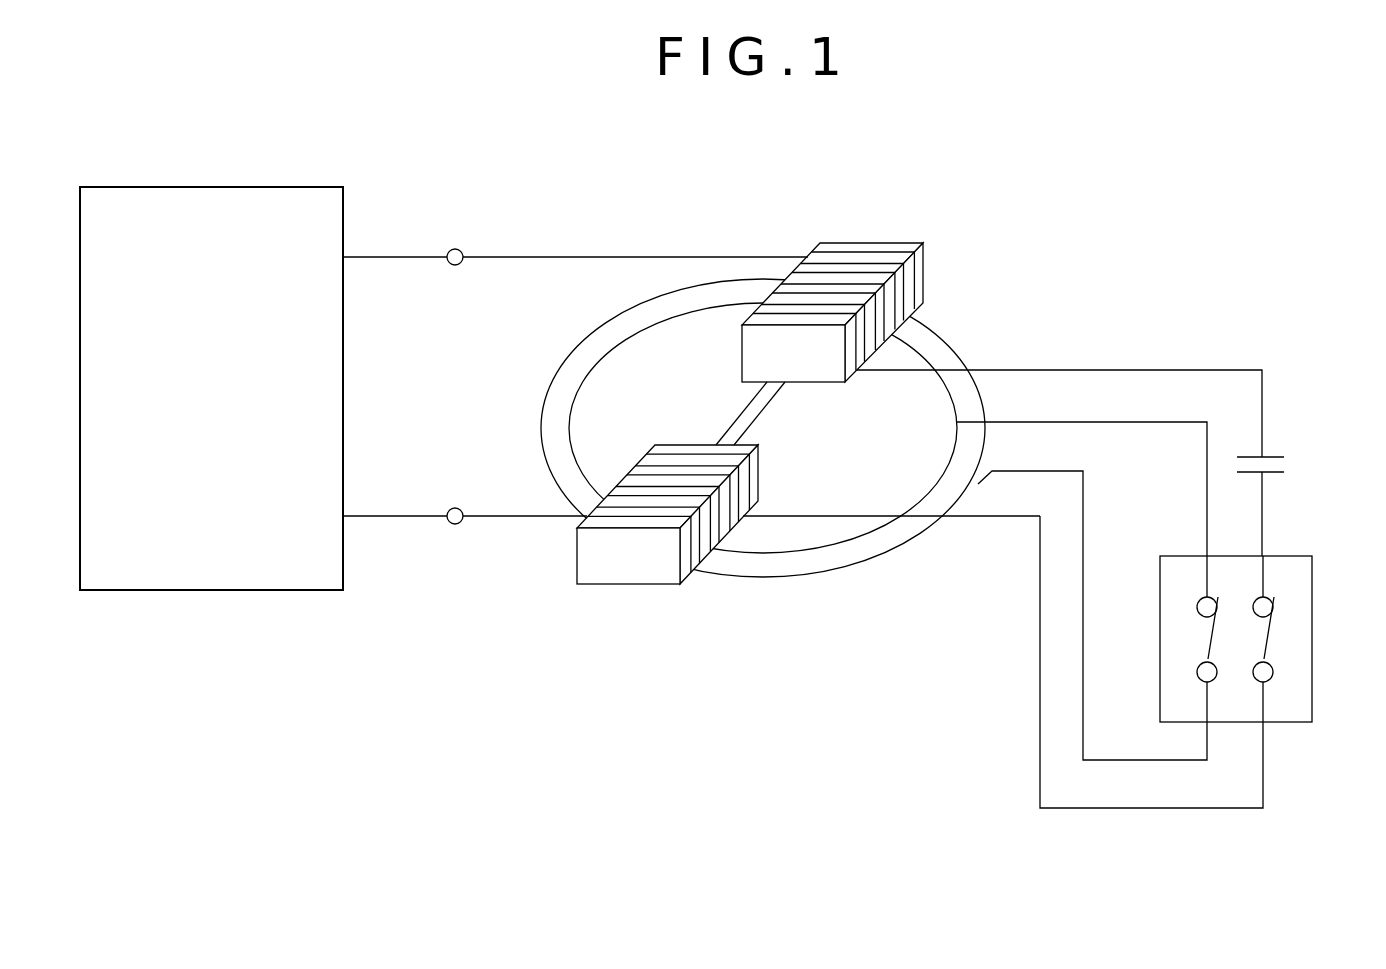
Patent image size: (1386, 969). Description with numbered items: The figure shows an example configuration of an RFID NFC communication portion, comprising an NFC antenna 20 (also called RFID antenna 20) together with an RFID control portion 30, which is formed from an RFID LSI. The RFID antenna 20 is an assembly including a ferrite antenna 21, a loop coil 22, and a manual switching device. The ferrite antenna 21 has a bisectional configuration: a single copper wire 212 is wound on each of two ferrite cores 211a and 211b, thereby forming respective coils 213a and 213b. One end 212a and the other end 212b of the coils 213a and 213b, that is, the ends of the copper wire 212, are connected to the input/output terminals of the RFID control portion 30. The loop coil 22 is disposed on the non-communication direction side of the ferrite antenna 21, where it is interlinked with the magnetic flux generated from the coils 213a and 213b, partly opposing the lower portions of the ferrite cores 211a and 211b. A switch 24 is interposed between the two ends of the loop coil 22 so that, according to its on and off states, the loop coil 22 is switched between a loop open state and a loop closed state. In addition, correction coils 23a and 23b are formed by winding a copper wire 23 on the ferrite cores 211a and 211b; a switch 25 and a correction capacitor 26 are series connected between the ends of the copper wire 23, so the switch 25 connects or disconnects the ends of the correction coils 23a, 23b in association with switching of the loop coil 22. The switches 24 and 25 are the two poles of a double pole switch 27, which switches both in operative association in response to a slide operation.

The RFID control portion 30 is at (222, 187).
The NFC antenna 20 is at (970, 183).
The ferrite antenna 21 is at (1082, 350).
The loop coil 22 is at (885, 556).
The copper wire 23 is at (1177, 369).
The correction coil 23a is at (852, 352).
The correction coil 23b is at (745, 490).
The switch 24 is at (1215, 637).
The switch 25 is at (1272, 633).
The correction capacitor 26 is at (1282, 455).
The double pole switch 27 is at (1292, 723).
The ferrite core 211a is at (894, 288).
The ferrite core 211b is at (671, 549).
The copper wire 212 is at (654, 256).
The one end 212a is at (456, 249).
The other end 212b is at (456, 508).
The coil 213a is at (923, 275).
The coil 213b is at (705, 545).